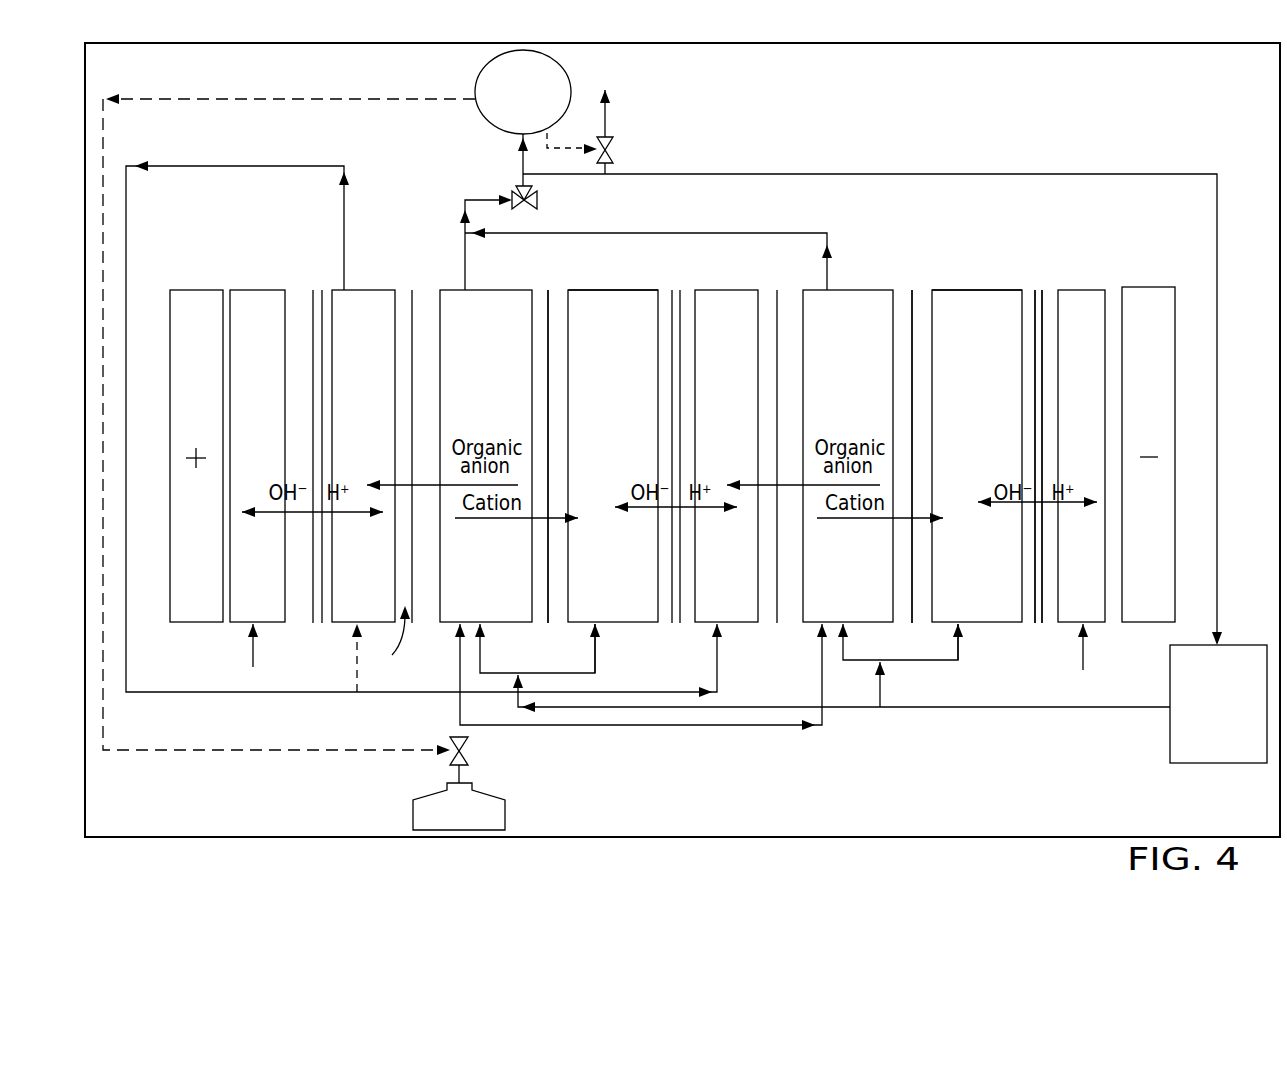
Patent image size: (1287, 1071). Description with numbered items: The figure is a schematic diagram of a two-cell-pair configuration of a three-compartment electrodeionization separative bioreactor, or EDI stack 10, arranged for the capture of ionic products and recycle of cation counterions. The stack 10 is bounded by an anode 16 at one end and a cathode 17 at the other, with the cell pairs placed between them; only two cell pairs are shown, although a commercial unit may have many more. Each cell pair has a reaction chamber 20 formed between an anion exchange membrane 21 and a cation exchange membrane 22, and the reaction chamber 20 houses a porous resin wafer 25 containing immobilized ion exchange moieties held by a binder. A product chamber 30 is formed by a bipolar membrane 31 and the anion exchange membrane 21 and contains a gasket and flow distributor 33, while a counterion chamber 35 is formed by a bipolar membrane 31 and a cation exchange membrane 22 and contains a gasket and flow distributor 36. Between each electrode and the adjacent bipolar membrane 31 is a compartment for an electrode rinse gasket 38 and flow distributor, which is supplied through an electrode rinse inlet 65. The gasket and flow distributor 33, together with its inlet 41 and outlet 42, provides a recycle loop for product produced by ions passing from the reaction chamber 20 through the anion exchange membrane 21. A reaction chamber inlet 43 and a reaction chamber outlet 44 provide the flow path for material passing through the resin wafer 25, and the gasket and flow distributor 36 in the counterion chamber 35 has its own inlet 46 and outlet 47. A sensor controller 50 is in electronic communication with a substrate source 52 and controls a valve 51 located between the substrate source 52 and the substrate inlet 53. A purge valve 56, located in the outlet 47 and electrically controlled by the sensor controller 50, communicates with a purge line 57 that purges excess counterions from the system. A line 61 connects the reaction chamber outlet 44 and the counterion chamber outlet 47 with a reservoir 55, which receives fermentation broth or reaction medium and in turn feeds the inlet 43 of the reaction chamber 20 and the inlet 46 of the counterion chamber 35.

The electrodeionization stack 10 is at (1052, 117).
The anode 16 is at (186, 335).
The cathode 17 is at (1138, 328).
The reaction chamber 20 is at (542, 608).
The anion exchange membrane 21 is at (553, 603).
The cation exchange membrane 22 is at (425, 602).
The resin wafer 25 is at (477, 568).
The product chamber 30 is at (386, 641).
The bipolar membrane 31 is at (317, 612).
The gasket and flow distributor 33 is at (358, 565).
The counterion chamber 35 is at (1026, 285).
The gasket and flow distributor 36 is at (602, 568).
The electrode rinse gasket 38 is at (253, 545).
The inlet 41 is at (357, 625).
The outlet 42 is at (347, 282).
The reaction chamber inlet 43 is at (482, 625).
The reaction chamber outlet 44 is at (466, 287).
The inlet 46 is at (597, 623).
The outlet 47 is at (613, 287).
The sensor controller 50 is at (476, 105).
The valve 51 is at (468, 744).
The substrate source 52 is at (413, 810).
The substrate inlet 53 is at (456, 713).
The reservoir 55 is at (1193, 765).
The purge valve 56 is at (615, 146).
The purge line 57 is at (607, 115).
The line 61 is at (1219, 442).
The electrode rinse inlet 65 is at (250, 642).